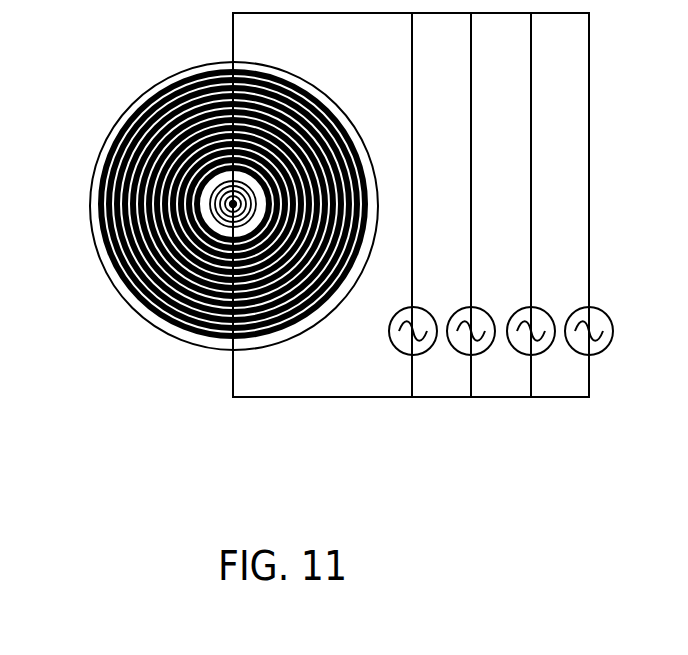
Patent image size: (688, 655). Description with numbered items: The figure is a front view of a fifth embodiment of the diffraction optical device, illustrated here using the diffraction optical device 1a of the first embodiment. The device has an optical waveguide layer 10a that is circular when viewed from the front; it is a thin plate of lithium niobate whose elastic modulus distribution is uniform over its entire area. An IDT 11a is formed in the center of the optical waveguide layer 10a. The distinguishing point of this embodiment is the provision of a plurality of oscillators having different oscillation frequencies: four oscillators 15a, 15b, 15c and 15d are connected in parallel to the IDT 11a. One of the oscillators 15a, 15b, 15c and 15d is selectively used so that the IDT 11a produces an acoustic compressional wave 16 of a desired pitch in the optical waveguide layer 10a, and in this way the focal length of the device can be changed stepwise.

The diffraction optical device 1a is at (200, 178).
The optical waveguide layer 10a is at (91, 206).
The IDT 11a is at (216, 188).
The acoustic compressional wave 16 is at (310, 97).
The oscillator 15a is at (427, 307).
The oscillator 15b is at (485, 307).
The oscillator 15c is at (546, 308).
The oscillator 15d is at (609, 310).